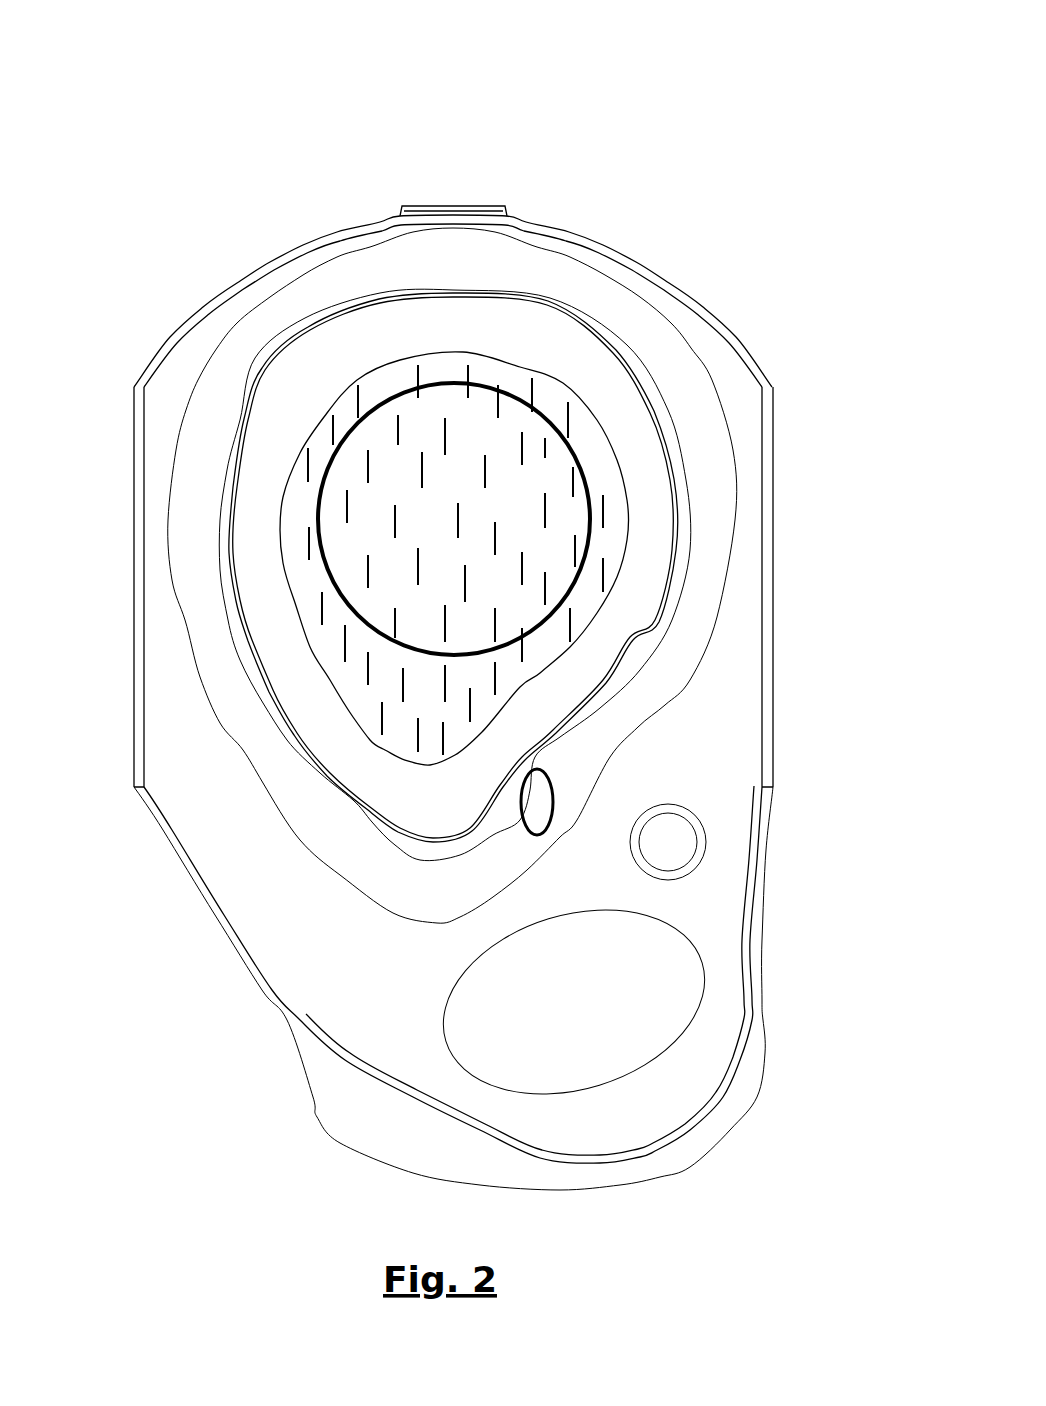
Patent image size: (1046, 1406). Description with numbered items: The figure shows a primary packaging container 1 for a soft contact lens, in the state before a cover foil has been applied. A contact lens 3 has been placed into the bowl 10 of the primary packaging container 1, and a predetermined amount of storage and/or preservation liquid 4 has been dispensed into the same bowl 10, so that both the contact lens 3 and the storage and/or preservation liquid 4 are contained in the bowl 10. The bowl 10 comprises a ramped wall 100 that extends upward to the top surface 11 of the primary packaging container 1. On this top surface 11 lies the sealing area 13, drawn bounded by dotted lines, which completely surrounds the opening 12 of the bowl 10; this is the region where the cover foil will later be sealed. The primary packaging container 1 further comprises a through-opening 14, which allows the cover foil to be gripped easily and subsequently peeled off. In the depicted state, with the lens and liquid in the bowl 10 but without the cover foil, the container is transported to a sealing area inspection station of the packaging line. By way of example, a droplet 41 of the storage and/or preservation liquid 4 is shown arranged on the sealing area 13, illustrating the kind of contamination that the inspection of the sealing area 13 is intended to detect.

The primary packaging container 1 is at (675, 237).
The contact lens 3 is at (480, 380).
The storage and/or preservation liquid 4 is at (312, 543).
The bowl 10 is at (410, 517).
The top surface 11 is at (250, 885).
The opening 12 is at (277, 697).
The sealing area 13 is at (680, 647).
The through-opening 14 is at (567, 1015).
The droplet 41 is at (540, 798).
The ramped wall 100 is at (637, 463).